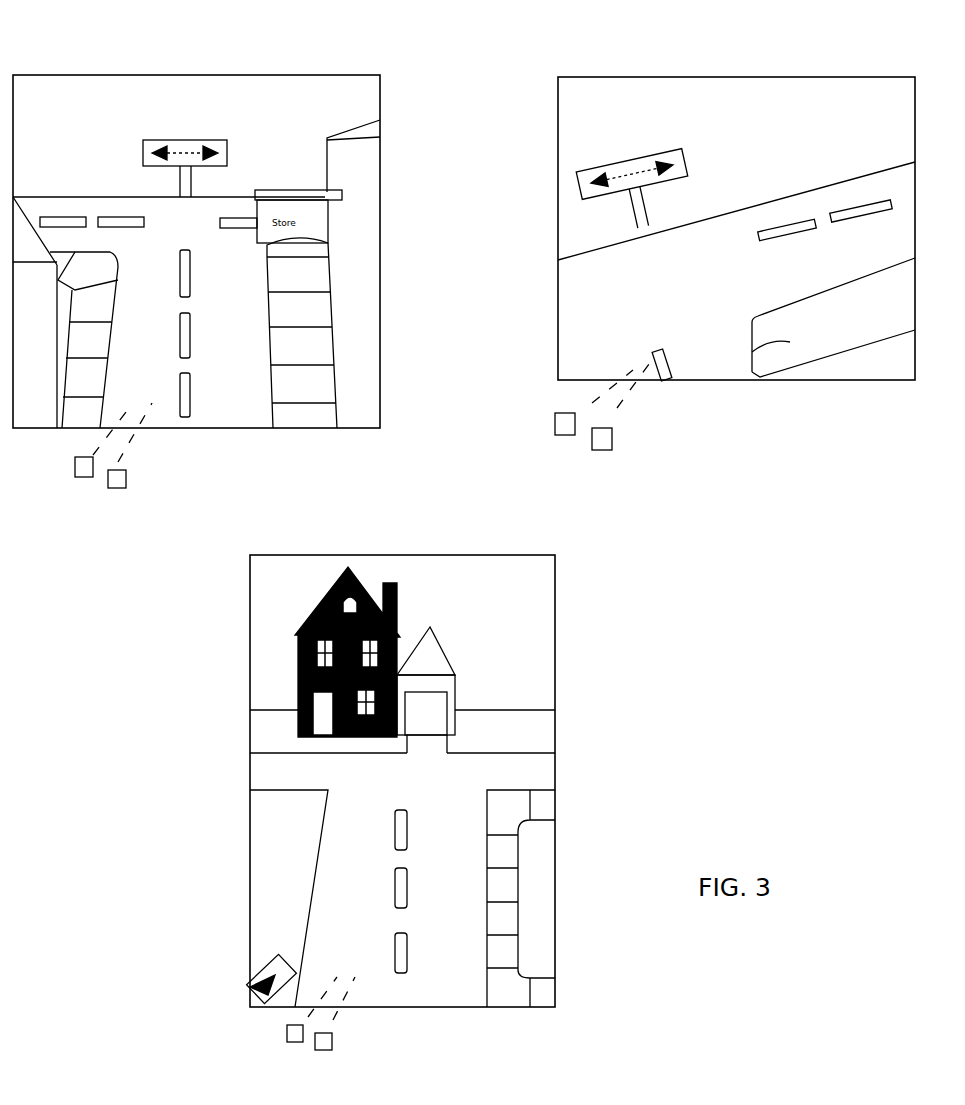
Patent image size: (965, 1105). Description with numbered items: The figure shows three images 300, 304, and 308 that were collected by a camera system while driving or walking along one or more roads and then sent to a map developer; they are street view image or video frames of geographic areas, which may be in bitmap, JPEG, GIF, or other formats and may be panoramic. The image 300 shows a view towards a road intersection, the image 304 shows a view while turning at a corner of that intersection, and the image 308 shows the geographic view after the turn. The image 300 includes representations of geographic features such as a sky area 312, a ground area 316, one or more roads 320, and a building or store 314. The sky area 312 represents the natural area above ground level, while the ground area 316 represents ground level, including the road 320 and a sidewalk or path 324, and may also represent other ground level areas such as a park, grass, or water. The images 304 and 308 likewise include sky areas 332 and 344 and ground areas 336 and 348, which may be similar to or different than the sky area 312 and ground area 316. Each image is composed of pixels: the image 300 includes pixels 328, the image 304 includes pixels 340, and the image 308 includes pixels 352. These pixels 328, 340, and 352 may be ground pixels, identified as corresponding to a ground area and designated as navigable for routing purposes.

The image 300 is at (355, 72).
The image 304 is at (852, 77).
The image 308 is at (555, 630).
The sky area 312 is at (72, 100).
The building or store 314 is at (355, 128).
The ground area 316 is at (293, 415).
The road 320 is at (212, 234).
The sidewalk or path 324 is at (285, 316).
The pixels 328 is at (117, 488).
The sky area 332 is at (750, 103).
The ground area 336 is at (788, 342).
The pixels 340 is at (607, 452).
The sky area 344 is at (320, 572).
The ground area 348 is at (487, 987).
The pixels 352 is at (322, 1050).